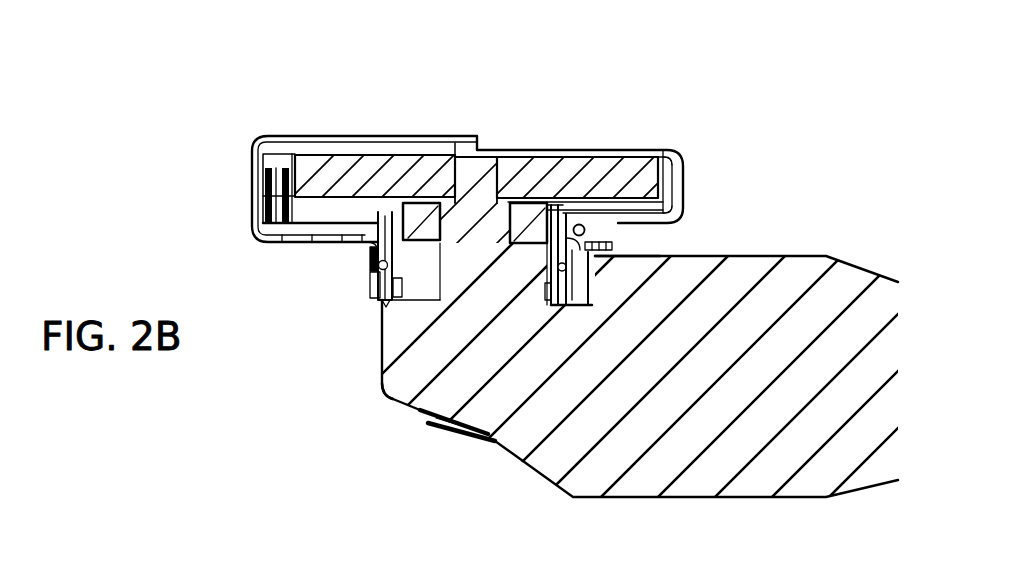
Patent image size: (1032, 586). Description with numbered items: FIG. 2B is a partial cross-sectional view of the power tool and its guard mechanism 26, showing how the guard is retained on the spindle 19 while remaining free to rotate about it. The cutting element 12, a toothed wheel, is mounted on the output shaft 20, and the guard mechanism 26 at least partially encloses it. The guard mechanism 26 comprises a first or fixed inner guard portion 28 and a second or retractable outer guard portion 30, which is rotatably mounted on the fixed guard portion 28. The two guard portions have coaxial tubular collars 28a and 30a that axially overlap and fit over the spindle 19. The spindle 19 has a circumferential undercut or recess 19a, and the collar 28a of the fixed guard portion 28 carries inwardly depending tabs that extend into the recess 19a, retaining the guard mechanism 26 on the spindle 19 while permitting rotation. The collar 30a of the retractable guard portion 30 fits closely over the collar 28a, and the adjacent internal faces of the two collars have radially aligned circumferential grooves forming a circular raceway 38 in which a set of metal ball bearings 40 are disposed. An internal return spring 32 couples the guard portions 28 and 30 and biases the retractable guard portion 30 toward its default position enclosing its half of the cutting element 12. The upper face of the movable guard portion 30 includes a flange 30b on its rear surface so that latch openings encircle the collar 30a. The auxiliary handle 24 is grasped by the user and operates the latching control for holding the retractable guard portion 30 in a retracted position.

The cutting element 12 is at (333, 172).
The spindle 19 is at (512, 218).
The circumferential undercut or recess 19a is at (424, 318).
The output shaft 20 is at (482, 166).
The auxiliary handle 24 is at (425, 427).
The guard mechanism 26 is at (775, 181).
The first (inner) guard portion 28 is at (684, 160).
The tubular collar 28a is at (548, 252).
The second (outer) guard portion 30 is at (265, 137).
The collar of retractable guard portion 30a is at (572, 305).
The flange 30b is at (648, 262).
The internal return spring 32 is at (612, 240).
The circular raceway 38 is at (587, 305).
The metal ball bearings 40 is at (392, 398).